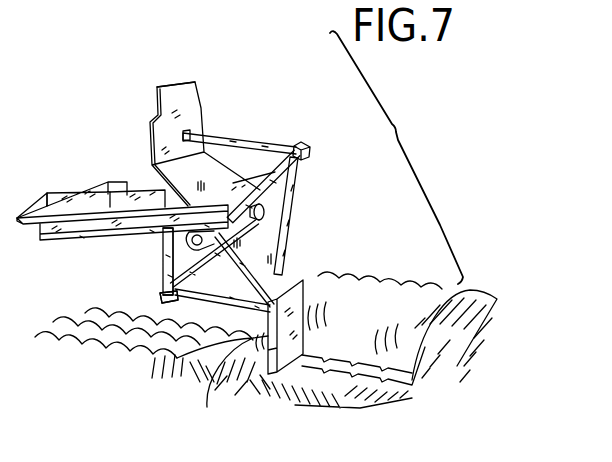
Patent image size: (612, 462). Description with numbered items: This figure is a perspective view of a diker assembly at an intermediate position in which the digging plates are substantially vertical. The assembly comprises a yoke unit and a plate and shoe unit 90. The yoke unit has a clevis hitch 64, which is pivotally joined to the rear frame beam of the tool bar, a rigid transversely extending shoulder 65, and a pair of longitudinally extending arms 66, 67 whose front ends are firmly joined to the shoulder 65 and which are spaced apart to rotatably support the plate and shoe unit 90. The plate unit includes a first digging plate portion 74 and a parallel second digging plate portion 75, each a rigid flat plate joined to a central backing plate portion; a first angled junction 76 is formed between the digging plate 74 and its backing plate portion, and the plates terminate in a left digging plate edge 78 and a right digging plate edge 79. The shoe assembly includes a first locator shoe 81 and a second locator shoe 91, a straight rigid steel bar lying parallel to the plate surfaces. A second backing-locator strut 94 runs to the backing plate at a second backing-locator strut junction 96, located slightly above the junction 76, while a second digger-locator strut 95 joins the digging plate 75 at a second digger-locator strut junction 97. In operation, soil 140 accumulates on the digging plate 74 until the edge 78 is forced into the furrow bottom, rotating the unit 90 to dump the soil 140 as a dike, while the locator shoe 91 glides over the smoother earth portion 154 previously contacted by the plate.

The clevis hitch 64 is at (46, 196).
The shoulder 65 is at (92, 190).
The arm 66 is at (110, 238).
The arm 67 is at (143, 198).
The first digging plate portion 74 is at (303, 304).
The second digging plate portion 75 is at (192, 97).
The first angled junction 76 is at (292, 286).
The left digging plate edge 78 is at (317, 367).
The right digging plate edge 79 is at (184, 84).
The first locator shoe 81 is at (168, 302).
The plate and shoe unit 90 is at (396, 157).
The second locator shoe 91 is at (306, 146).
The second backing-locator strut 94 is at (292, 204).
The second digger-locator strut 95 is at (255, 142).
The second backing-locator strut junction 96 is at (294, 266).
The second digger-locator strut junction 97 is at (194, 130).
The accumulated soil 140 is at (233, 378).
The smoother portion of earth 154 is at (352, 382).